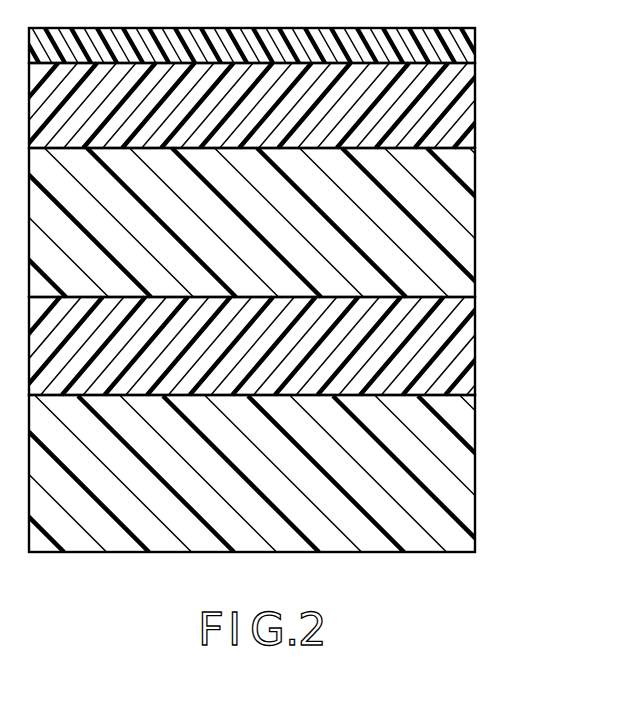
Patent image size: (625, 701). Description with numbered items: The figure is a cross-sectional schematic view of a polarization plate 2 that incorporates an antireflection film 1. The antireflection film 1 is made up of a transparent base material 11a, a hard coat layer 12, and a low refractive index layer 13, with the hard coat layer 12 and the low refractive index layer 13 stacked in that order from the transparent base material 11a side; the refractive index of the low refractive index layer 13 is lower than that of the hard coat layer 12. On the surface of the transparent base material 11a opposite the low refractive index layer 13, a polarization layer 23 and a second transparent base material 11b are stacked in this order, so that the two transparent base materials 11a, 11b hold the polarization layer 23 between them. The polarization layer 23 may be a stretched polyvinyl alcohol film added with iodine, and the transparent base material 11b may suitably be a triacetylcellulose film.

The antireflection film 1 is at (309, 162).
The polarization plate 2 is at (309, 290).
The transparent base material 11a is at (309, 222).
The transparent base material 11b is at (308, 473).
The hard coat layer 12 is at (489, 63).
The low refractive index layer 13 is at (489, 28).
The polarization layer 23 is at (490, 297).